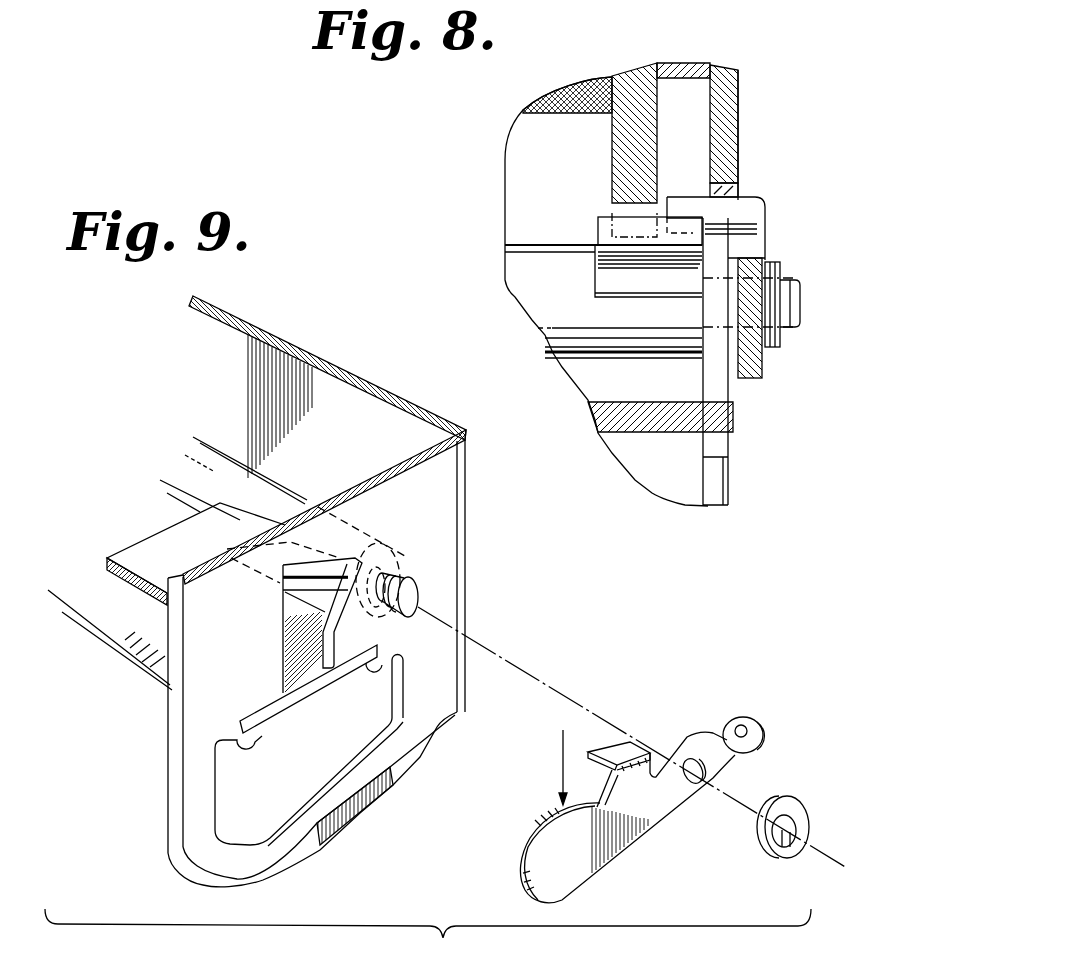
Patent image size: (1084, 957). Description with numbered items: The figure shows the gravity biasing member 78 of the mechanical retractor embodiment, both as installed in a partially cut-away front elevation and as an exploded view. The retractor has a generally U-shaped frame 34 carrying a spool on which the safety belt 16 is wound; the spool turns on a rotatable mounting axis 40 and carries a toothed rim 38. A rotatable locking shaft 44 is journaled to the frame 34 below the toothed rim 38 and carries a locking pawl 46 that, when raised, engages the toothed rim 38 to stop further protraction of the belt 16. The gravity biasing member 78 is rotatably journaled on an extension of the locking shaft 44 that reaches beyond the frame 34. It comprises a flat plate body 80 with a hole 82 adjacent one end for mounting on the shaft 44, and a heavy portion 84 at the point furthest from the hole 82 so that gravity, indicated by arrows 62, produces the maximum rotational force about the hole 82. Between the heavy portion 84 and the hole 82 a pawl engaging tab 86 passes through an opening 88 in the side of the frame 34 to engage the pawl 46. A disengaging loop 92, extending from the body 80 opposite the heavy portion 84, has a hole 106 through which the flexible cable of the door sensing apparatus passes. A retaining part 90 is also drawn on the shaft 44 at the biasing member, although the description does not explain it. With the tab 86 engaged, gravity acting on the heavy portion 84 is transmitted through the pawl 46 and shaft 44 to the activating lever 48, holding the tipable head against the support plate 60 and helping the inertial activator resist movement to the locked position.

In FIG. 8, the safety belt 16 is at (560, 95).
In FIG. 8, the frame 34 is at (728, 90).
In FIG. 9, the frame 34 is at (240, 363).
In FIG. 8, the toothed rim 38 is at (626, 93).
In FIG. 8, the rotatable mounting axis 40 is at (688, 63).
In FIG. 8, the rotatable locking shaft 44 is at (800, 302).
In FIG. 9, the rotatable locking shaft 44 is at (415, 593).
In FIG. 8, the locking pawl 46 is at (603, 228).
In FIG. 9, the locking pawl 46 is at (315, 572).
In FIG. 9, the activating lever 48 is at (150, 583).
In FIG. 8, the support plate 60 is at (733, 417).
In FIG. 9, the support plate 60 is at (282, 707).
In FIG. 9, the arrows indicating force of gravity 62 is at (563, 770).
In FIG. 8, the gravity biasing member 78 is at (787, 198).
In FIG. 9, the gravity biasing member 78 is at (666, 735).
In FIG. 8, the flat plate body 80 is at (753, 357).
In FIG. 9, the flat plate body 80 is at (644, 818).
In FIG. 8, the hole 82 is at (747, 280).
In FIG. 9, the hole 82 is at (695, 783).
In FIG. 9, the heavy portion 84 is at (552, 873).
In FIG. 8, the pawl engaging tab 86 is at (680, 205).
In FIG. 9, the pawl engaging tab 86 is at (619, 752).
In FIG. 8, the opening 88 is at (730, 190).
In FIG. 9, the opening 88 is at (297, 643).
In FIG. 8, the retaining washer 90 is at (772, 335).
In FIG. 9, the retaining washer 90 is at (773, 852).
In FIG. 9, the disengaging loop 92 is at (763, 740).
In FIG. 9, the hole 106 is at (741, 731).